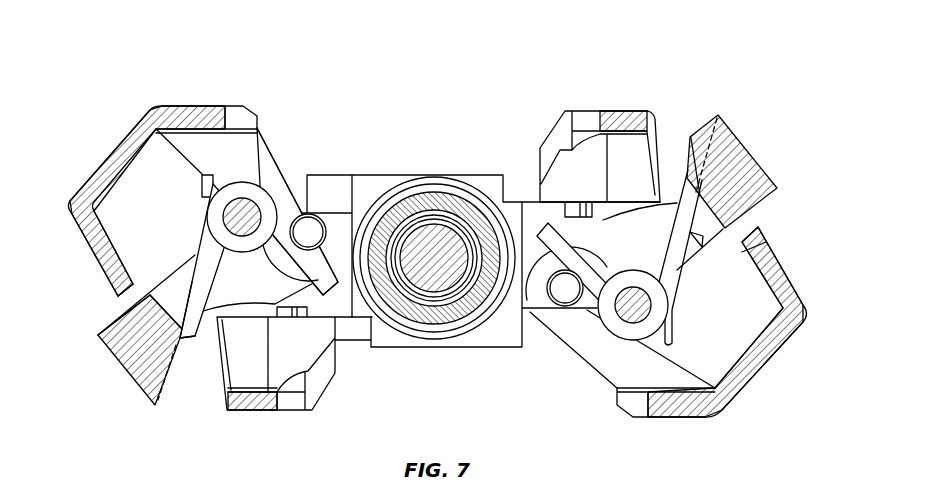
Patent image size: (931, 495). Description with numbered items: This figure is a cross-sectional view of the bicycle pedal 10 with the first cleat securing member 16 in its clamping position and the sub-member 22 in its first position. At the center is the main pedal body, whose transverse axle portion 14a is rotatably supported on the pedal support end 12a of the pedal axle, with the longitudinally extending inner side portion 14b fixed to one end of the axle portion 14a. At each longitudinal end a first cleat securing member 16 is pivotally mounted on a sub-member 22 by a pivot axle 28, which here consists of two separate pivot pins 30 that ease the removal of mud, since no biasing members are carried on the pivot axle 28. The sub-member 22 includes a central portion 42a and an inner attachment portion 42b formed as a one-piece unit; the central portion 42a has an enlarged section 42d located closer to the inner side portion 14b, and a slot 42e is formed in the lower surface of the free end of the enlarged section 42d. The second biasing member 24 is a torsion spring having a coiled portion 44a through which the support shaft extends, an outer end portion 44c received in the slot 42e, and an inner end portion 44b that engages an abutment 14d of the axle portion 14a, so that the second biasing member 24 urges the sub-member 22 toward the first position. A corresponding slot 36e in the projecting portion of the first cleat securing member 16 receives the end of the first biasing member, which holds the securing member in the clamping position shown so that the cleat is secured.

The bicycle pedal 10 is at (433, 232).
The pedal support end 12a is at (436, 280).
The transverse axle portion 14a is at (436, 177).
The longitudinally extending inner side portion 14b is at (340, 188).
The abutment 14d is at (344, 272).
The first cleat securing member 16 is at (183, 103).
The sub-member 22 is at (112, 372).
The second biasing member 24 is at (255, 172).
The pivot axle 28 is at (309, 209).
The pivot pins 30 is at (322, 236).
The slot 36e is at (118, 287).
The central portion 42a is at (106, 348).
The inner attachment portion 42b is at (247, 288).
The enlarged section 42d is at (148, 374).
The slot 42e is at (733, 124).
The coiled portion 44a is at (220, 198).
The inner end portion 44b is at (403, 180).
The outer end portion 44c is at (188, 332).